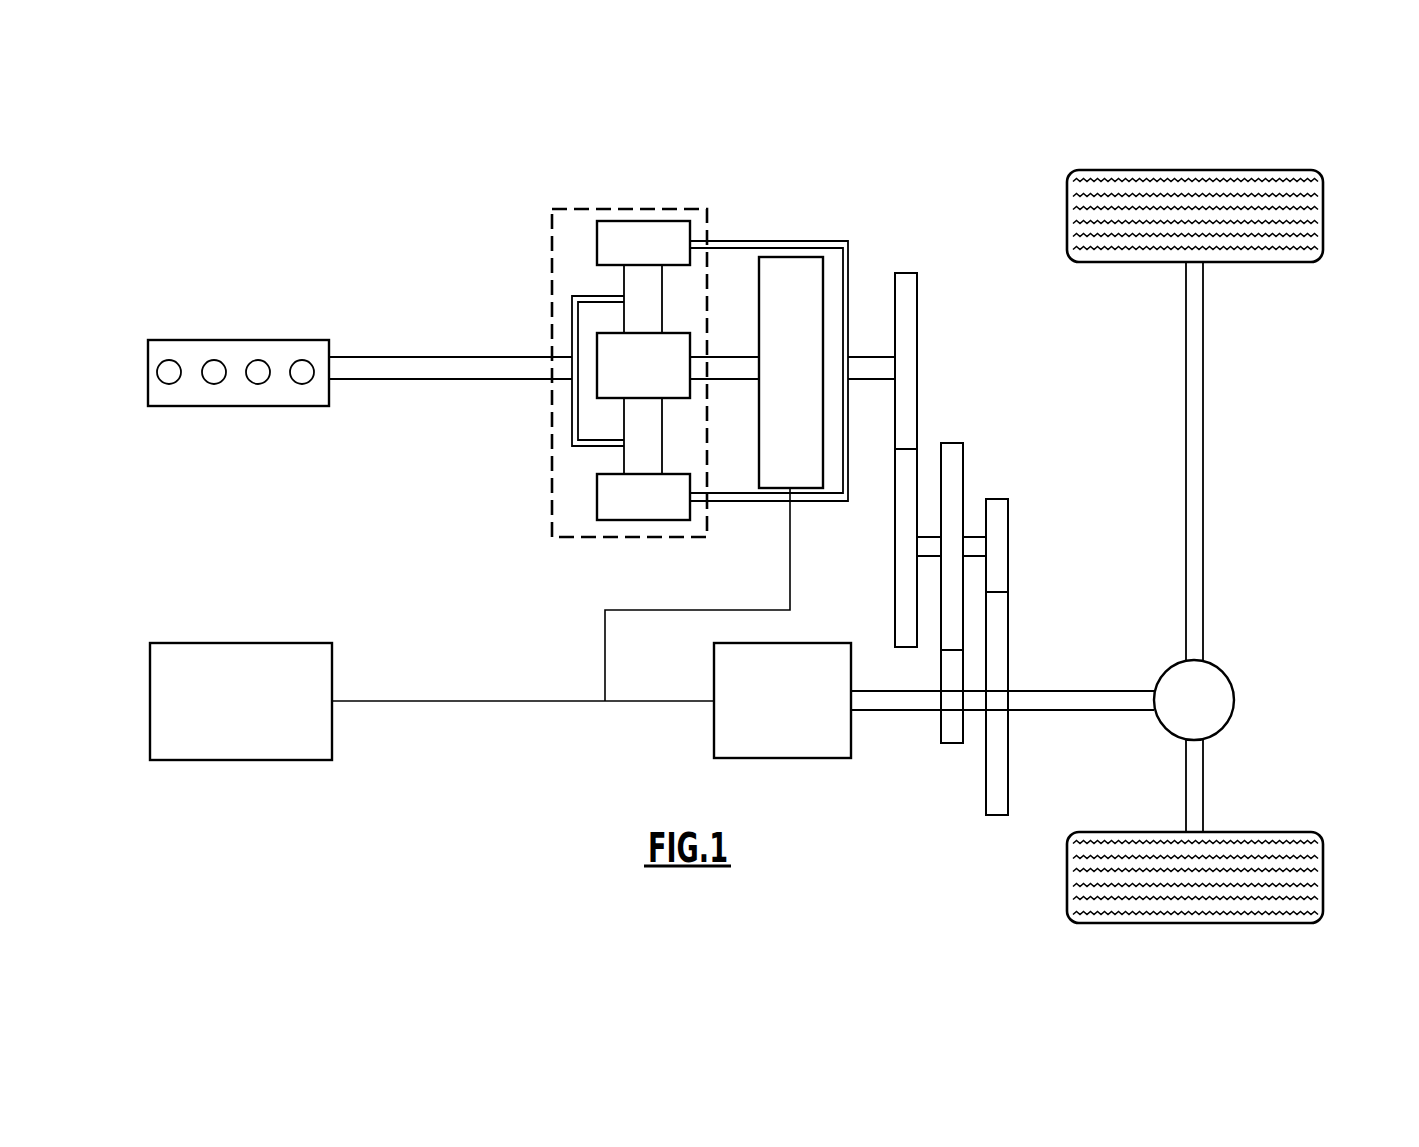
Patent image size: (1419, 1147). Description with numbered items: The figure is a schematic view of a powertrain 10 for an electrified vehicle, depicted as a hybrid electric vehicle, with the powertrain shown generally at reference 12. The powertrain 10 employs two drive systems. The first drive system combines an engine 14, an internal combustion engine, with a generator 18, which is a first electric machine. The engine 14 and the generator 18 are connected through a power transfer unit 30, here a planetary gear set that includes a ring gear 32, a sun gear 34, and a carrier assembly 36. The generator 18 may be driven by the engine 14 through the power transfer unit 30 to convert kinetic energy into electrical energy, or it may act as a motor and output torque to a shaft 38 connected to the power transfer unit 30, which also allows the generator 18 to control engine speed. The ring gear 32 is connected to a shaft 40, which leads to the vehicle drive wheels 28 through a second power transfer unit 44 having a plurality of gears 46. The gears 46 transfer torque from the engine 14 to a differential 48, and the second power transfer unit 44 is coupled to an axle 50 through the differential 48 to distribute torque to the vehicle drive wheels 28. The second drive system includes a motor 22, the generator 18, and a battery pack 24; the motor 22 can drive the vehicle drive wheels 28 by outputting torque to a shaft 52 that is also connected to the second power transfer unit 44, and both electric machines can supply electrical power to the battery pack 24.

The powertrain 10 is at (388, 235).
The powertrain 12 is at (818, 163).
The engine 14 is at (163, 340).
The generator 18 is at (767, 257).
The motor 22 is at (852, 742).
The battery pack 24 is at (170, 643).
The vehicle drive wheels 28 is at (1183, 170).
The power transfer unit 30 is at (552, 491).
The ring gear 32 is at (597, 242).
The sun gear 34 is at (597, 343).
The carrier assembly 36 is at (572, 430).
The shaft 38 is at (718, 353).
The shaft 40 is at (877, 357).
The second power transfer unit 44 is at (993, 405).
The gears 46 is at (917, 410).
The differential 48 is at (1228, 722).
The axle 50 is at (1203, 450).
The shaft 52 is at (907, 712).